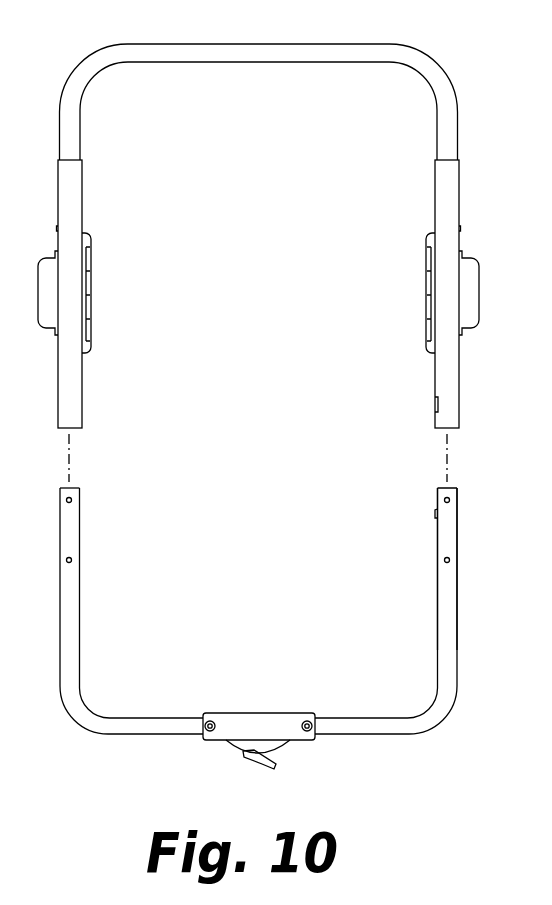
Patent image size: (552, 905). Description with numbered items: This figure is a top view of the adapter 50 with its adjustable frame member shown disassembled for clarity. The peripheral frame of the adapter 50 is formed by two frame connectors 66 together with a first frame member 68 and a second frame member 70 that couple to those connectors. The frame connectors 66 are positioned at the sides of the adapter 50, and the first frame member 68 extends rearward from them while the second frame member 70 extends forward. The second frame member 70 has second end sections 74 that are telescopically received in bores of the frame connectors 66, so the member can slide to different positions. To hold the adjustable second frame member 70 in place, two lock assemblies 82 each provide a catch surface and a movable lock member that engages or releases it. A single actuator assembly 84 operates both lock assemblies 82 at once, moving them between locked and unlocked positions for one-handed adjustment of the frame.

The adapter 50 is at (66, 735).
The first frame member 68 is at (449, 69).
The frame connectors 66 is at (85, 402).
The second frame member 70 is at (288, 637).
The second end section 74 is at (459, 540).
The lock assemblies 82 is at (90, 514).
The actuator assembly 84 is at (234, 759).